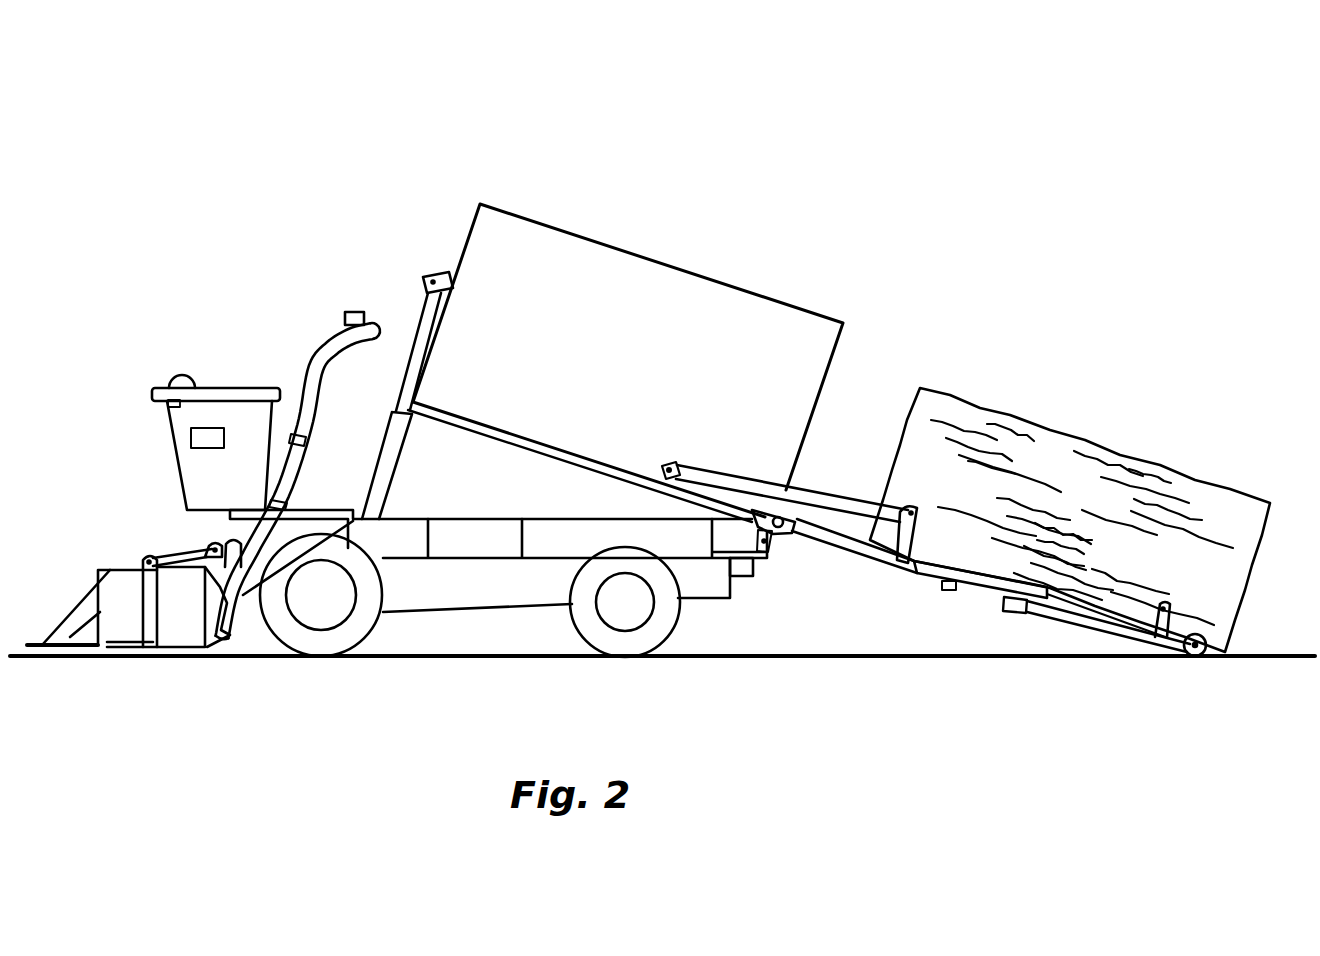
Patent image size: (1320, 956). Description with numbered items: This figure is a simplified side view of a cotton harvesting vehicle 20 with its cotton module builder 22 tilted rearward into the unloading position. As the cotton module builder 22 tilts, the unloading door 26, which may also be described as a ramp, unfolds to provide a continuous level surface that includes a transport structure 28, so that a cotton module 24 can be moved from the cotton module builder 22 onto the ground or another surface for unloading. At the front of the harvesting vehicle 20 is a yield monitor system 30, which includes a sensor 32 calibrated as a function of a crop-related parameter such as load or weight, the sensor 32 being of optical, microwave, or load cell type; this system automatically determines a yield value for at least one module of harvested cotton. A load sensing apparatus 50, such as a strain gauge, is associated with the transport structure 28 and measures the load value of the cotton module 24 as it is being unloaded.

The cotton harvesting vehicle 20 is at (952, 150).
The cotton module builder 22 is at (688, 261).
The cotton module 24 is at (1143, 457).
The unloading door 26 is at (931, 584).
The transport structure 28 is at (813, 537).
The yield monitor system 30 is at (175, 434).
The sensor 32 is at (354, 312).
The load sensing apparatus 50 is at (1010, 613).